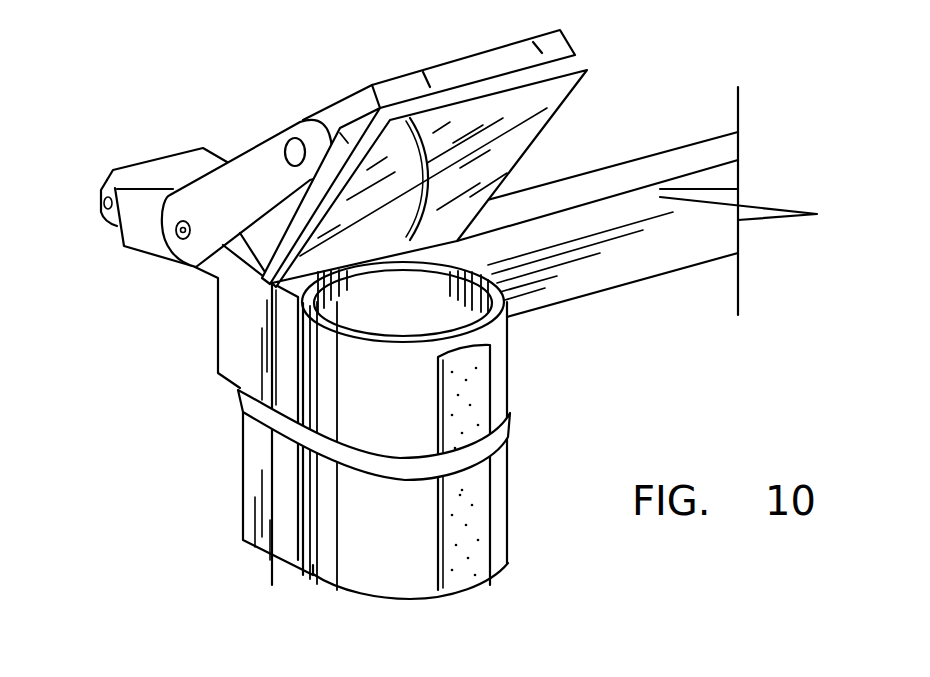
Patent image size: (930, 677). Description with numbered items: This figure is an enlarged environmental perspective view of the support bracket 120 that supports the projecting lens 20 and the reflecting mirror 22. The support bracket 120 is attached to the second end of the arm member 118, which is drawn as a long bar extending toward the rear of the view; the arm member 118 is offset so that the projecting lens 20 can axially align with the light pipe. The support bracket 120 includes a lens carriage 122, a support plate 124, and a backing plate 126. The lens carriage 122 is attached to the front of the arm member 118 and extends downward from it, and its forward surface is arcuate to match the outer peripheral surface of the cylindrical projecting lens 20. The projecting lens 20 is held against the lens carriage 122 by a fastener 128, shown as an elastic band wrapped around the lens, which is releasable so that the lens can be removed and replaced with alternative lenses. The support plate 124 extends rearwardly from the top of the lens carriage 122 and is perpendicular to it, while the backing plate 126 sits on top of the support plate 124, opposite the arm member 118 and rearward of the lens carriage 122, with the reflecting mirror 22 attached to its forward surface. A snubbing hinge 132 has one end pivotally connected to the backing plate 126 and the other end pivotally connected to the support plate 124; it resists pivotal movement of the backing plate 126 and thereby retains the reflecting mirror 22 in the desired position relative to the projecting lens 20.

The projecting lens 20 is at (498, 372).
The reflecting mirror 22 is at (522, 142).
The arm member 118 is at (722, 146).
The support bracket 120 is at (319, 302).
The lens carriage 122 is at (294, 562).
The support plate 124 is at (178, 166).
The backing plate 126 is at (478, 54).
The fastener 128 is at (500, 441).
The snubbing hinge 132 is at (148, 243).